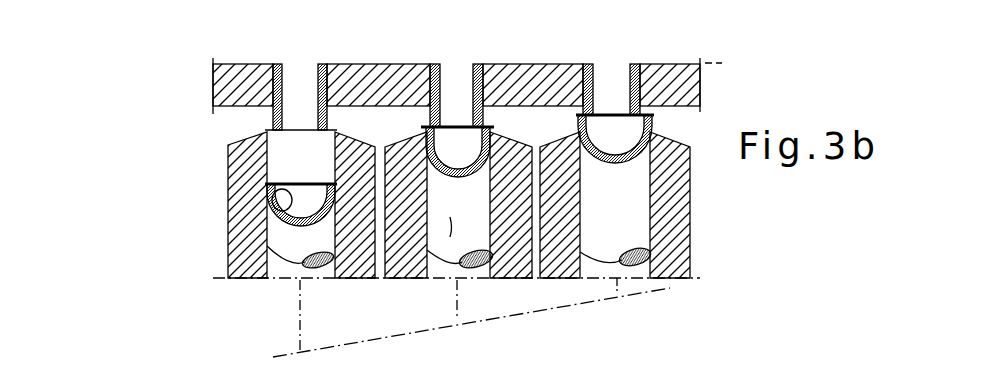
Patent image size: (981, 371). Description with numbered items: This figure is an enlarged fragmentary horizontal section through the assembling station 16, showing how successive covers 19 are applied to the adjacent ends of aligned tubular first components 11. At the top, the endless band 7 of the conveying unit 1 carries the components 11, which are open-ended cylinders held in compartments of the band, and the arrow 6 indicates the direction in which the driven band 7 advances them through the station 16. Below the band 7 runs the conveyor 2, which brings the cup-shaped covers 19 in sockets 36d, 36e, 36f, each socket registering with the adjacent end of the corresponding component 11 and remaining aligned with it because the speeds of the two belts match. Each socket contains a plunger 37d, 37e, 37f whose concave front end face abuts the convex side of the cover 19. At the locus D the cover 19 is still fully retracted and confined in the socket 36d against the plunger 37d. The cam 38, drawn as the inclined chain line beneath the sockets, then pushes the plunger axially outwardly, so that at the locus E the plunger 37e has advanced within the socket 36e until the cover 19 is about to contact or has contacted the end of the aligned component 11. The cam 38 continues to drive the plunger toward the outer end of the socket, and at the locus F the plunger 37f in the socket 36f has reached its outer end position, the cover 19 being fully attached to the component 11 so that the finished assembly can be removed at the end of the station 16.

The conveying unit 1 is at (692, 43).
The conveyor 2 is at (212, 280).
The arrow 6 is at (408, 50).
The endless band 7 is at (232, 66).
The first component 11 is at (288, 66).
The assembling station 16 is at (157, 126).
The cover 19 is at (452, 126).
The socket 36d is at (228, 208).
The socket 36e is at (508, 280).
The socket 36f is at (673, 222).
The plunger 37d is at (228, 248).
The plunger 37e is at (427, 278).
The plunger 37f is at (620, 238).
The cam 38 is at (375, 338).
The locus D is at (250, 283).
The locus E is at (475, 283).
The locus F is at (673, 278).